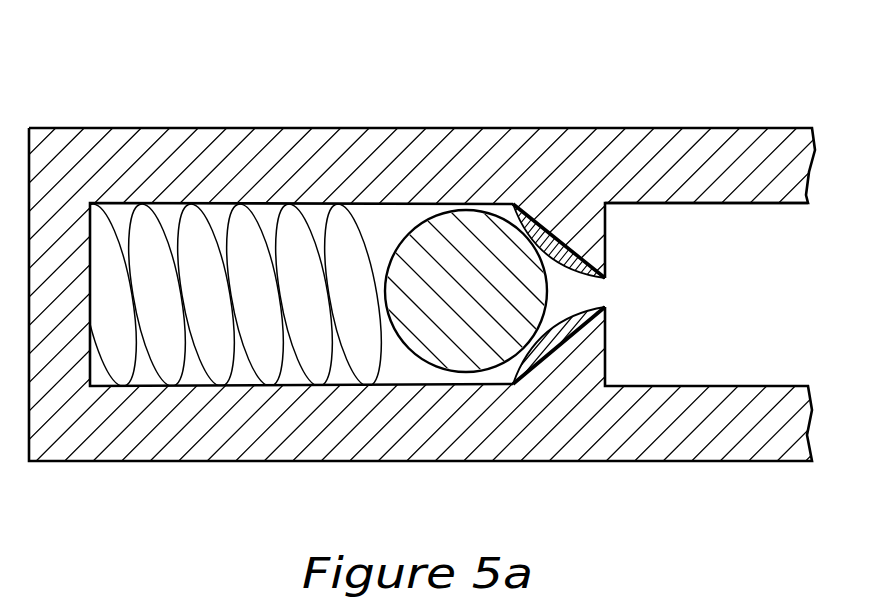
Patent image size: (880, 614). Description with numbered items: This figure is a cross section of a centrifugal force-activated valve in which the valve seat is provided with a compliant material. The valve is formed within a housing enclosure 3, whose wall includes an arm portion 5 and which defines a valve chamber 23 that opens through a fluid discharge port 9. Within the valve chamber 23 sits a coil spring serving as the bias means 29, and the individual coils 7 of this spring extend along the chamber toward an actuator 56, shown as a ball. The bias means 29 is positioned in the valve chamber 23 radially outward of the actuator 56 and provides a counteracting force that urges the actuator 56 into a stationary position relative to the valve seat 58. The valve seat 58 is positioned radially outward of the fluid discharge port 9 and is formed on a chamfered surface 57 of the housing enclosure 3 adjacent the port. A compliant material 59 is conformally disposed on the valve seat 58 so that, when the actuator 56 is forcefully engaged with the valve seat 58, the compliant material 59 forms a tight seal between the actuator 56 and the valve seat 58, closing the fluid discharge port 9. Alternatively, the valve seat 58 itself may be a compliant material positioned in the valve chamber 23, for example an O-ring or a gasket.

The housing enclosure 3 is at (500, 203).
The housing arm 5 is at (732, 230).
The coil spring 7 is at (204, 206).
The fluid discharge port 9 is at (602, 293).
The valve chamber 23 is at (130, 372).
The bias means 29 is at (227, 368).
The actuator 56 is at (443, 248).
The seat chamfer 57 is at (503, 203).
The valve seat 58 is at (532, 220).
The compliant material 59 is at (565, 233).